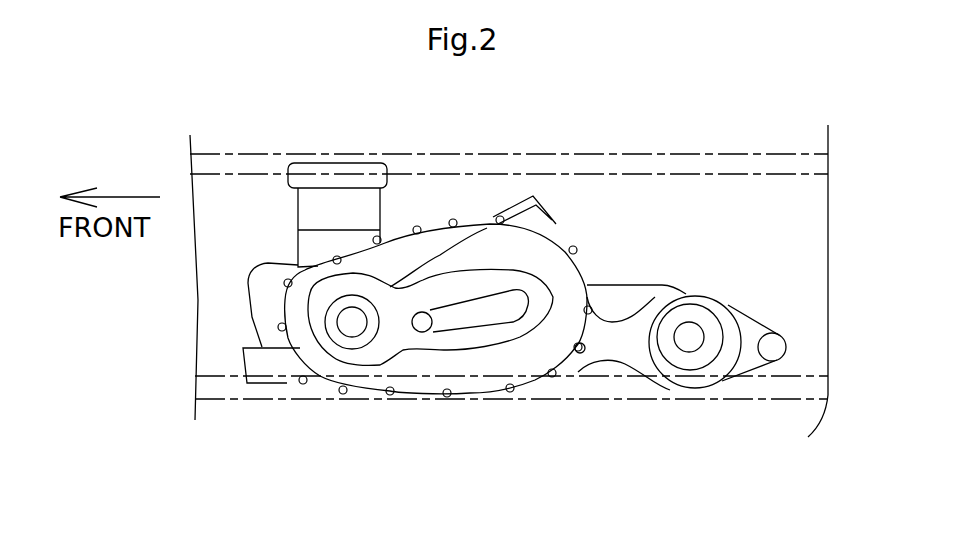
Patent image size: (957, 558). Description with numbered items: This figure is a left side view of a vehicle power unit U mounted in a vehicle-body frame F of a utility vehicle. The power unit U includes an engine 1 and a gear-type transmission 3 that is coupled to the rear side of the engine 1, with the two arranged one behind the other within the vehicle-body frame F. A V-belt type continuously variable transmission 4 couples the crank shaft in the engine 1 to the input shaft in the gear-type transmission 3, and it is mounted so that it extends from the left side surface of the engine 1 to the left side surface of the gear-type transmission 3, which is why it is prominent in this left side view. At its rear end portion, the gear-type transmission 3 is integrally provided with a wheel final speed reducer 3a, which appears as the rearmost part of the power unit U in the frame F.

The engine 1 is at (280, 322).
The gear-type transmission 3 is at (622, 313).
The wheel final speed reducer 3a is at (689, 333).
The V-belt type continuously variable transmission 4 is at (473, 347).
The power unit U is at (487, 191).
The vehicle-body frame F is at (711, 163).